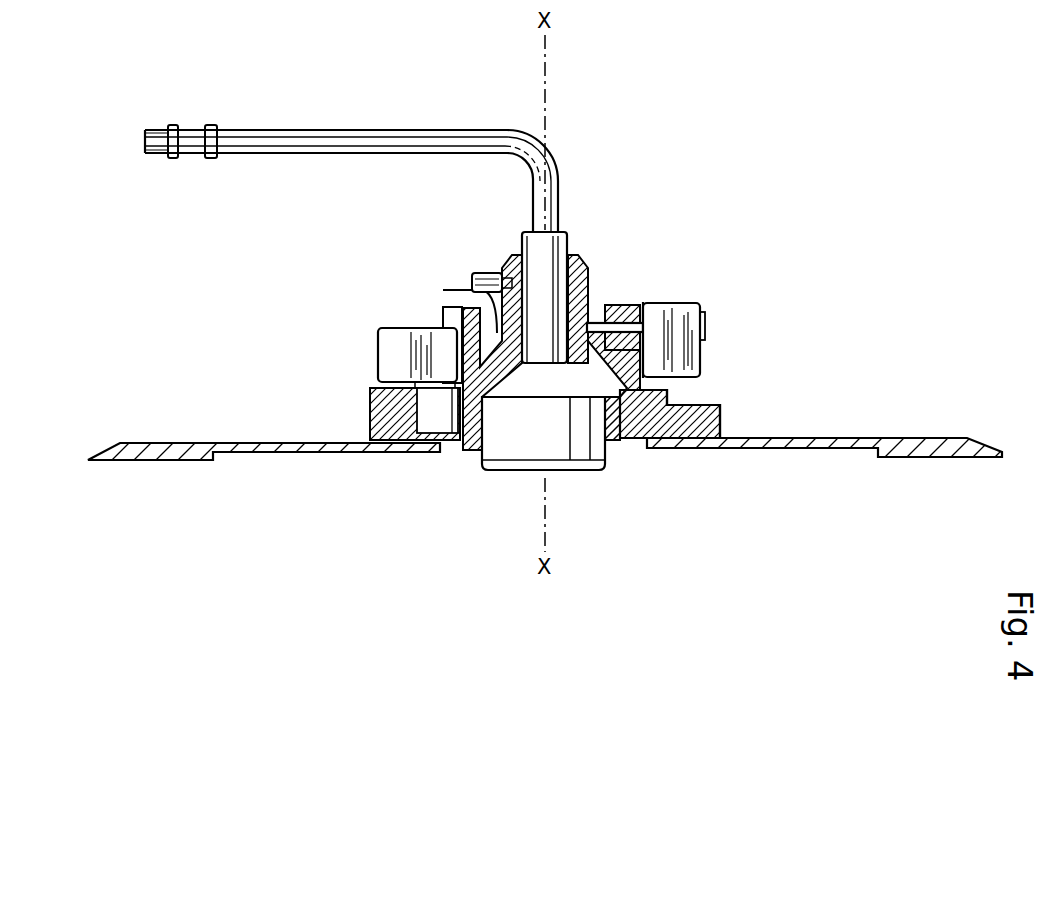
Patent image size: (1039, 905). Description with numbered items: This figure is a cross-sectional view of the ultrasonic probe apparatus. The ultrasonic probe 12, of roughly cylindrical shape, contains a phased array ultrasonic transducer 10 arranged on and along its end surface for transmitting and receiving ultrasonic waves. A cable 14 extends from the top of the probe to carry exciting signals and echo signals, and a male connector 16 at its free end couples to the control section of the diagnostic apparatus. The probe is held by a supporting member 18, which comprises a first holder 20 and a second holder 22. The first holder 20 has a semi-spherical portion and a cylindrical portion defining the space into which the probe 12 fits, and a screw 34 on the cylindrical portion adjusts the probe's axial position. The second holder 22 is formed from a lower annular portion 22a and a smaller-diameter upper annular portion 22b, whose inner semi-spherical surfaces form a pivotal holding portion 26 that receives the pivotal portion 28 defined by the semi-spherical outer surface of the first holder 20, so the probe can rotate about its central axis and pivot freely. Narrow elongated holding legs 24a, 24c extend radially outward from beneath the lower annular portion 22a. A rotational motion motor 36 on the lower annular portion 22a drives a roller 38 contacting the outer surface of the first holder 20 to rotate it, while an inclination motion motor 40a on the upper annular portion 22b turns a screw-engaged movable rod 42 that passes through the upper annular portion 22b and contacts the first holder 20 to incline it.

The phased array ultrasonic transducer 10 is at (577, 462).
The ultrasonic probe 12 is at (527, 440).
The cable 14 is at (467, 130).
The male connector 16 is at (191, 154).
The supporting member 18 is at (612, 318).
The first holder 20 is at (473, 442).
The second holder 22 is at (667, 405).
The lower annular portion 22a is at (720, 422).
The upper annular portion 22b is at (667, 388).
The holding leg 24a is at (922, 438).
The holding leg 24c is at (183, 443).
The pivotal holding portion 26 is at (612, 455).
The pivotal portion 28 is at (468, 291).
The screw 34 is at (474, 272).
The rotational motion motor 36 is at (393, 348).
The roller 38 is at (378, 405).
The inclination motion motor 40a is at (683, 313).
The movable rod 42 is at (605, 320).